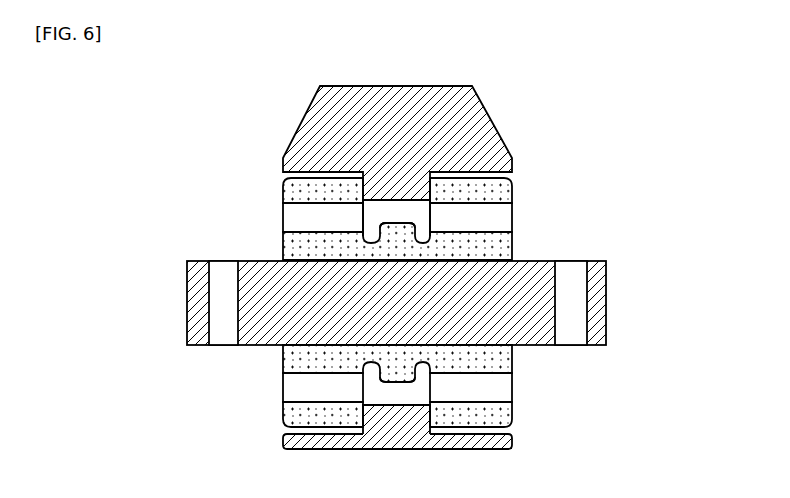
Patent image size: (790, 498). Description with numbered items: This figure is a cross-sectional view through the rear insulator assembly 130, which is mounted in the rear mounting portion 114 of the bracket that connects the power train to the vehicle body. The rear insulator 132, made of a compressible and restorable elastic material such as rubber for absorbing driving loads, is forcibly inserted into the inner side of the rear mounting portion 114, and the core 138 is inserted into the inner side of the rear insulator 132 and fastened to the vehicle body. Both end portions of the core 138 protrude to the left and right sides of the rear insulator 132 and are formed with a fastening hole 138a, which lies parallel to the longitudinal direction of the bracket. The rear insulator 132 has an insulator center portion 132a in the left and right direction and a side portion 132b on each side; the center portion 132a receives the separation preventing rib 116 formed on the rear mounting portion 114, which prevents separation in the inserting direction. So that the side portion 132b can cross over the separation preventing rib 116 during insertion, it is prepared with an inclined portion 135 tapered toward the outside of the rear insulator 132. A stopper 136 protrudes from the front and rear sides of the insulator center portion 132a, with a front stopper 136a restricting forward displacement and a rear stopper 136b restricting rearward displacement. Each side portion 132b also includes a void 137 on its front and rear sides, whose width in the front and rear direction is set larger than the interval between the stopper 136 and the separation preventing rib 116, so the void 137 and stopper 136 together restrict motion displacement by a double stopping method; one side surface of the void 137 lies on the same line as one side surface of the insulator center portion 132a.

The rear insulator assembly 130 is at (176, 130).
The rear insulator 132 is at (433, 237).
The insulator center portion 132a is at (423, 234).
The side portion 132b is at (276, 232).
The inclined portion 135 is at (283, 165).
The stopper 136 is at (351, 273).
The front stopper 136a is at (397, 222).
The rear stopper 136b is at (397, 382).
The void 137 is at (323, 217).
The core 138 is at (438, 272).
The fastening hole 138a is at (222, 272).
The rear mounting portion 114 is at (512, 440).
The separation preventing rib 116 is at (426, 397).